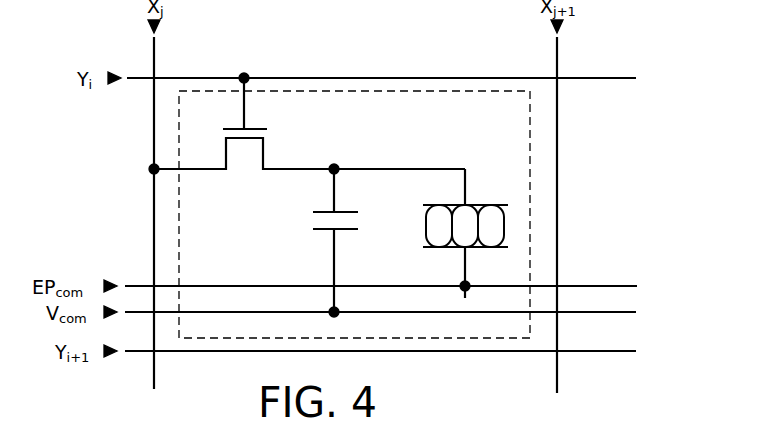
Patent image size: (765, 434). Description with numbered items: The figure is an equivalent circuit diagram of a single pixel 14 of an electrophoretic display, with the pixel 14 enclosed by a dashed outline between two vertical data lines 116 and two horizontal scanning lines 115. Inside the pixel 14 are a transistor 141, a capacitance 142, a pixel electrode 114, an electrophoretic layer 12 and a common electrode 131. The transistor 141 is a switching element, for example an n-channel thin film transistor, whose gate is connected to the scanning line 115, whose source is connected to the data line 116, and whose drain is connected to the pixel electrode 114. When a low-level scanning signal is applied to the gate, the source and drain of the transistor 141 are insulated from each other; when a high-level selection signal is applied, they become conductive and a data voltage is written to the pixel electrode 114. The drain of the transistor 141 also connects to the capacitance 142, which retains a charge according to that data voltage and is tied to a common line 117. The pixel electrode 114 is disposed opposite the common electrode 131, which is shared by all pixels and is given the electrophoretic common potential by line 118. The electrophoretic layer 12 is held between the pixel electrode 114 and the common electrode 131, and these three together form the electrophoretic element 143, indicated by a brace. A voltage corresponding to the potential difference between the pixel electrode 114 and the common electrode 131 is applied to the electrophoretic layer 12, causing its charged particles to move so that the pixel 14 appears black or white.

The electrophoretic layer 12 is at (495, 228).
The pixel 14 is at (178, 245).
The pixel electrode 114 is at (502, 205).
The scanning line 115 is at (594, 80).
The data line 116 is at (152, 371).
The common potential line 117 is at (628, 312).
The electrophoretic common potential line 118 is at (628, 286).
The common electrode 131 is at (515, 254).
The transistor 141 is at (246, 160).
The capacitance 142 is at (310, 222).
The electrophoretic element 143 is at (549, 216).